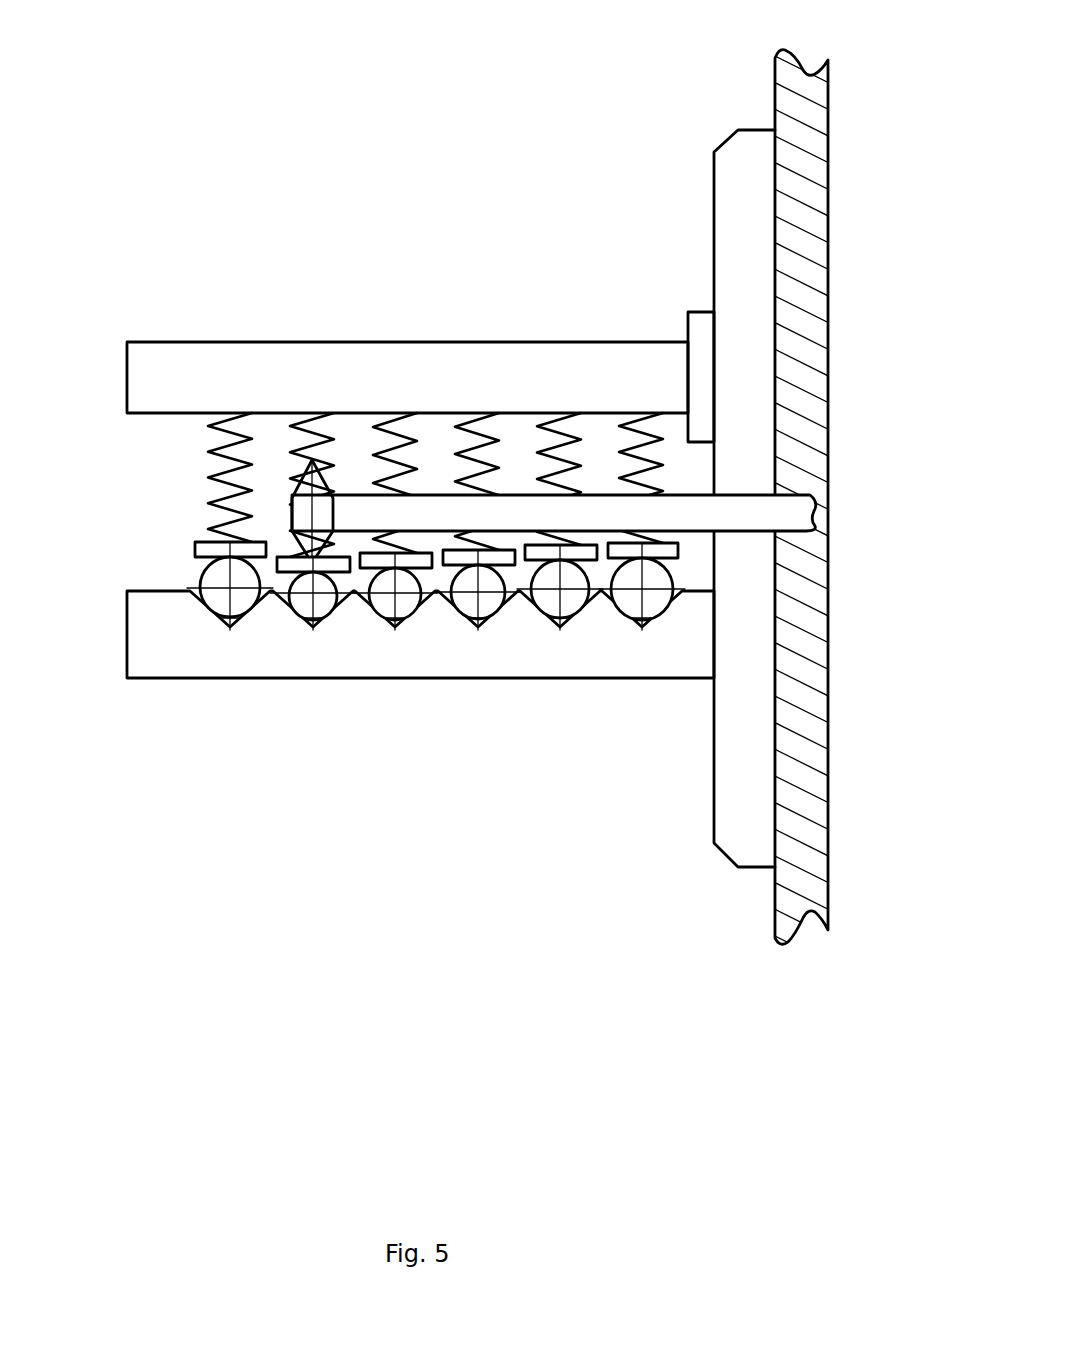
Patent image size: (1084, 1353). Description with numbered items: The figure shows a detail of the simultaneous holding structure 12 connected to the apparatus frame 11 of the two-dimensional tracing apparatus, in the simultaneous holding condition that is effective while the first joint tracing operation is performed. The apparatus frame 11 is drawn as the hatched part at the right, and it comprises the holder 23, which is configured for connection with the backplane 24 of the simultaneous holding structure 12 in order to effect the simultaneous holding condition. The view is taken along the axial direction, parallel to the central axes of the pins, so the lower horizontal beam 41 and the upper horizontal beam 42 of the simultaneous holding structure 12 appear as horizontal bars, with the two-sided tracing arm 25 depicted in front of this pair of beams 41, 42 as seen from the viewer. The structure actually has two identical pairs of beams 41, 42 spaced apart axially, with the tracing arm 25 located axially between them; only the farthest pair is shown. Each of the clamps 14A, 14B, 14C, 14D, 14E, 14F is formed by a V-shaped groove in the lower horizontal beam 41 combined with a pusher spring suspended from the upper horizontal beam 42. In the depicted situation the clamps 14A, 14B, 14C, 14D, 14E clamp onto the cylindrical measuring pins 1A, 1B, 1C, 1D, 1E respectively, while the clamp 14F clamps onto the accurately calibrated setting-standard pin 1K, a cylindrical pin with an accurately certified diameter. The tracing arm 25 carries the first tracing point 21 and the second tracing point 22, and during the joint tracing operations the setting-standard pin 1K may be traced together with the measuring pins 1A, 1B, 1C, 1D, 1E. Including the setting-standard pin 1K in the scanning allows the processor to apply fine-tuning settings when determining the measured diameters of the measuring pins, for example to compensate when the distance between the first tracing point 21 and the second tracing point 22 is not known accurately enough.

The apparatus frame 11 is at (725, 481).
The simultaneous holding structure 12 is at (429, 391).
The holder of the apparatus frame 23 is at (775, 97).
The backplane of the simultaneous holding structure 24 is at (714, 166).
The tracing arm 25 is at (527, 492).
The second tracing point 22 is at (312, 460).
The first tracing point 21 is at (307, 570).
The upper horizontal beam 42 is at (127, 397).
The lower horizontal beam 41 is at (127, 641).
The clamp 14A is at (639, 402).
The clamp 14B is at (556, 402).
The clamp 14C is at (477, 402).
The clamp 14D is at (400, 402).
The clamp 14E is at (300, 402).
The clamp 14F is at (233, 402).
The cylindrical measuring pin 1A is at (640, 630).
The cylindrical measuring pin 1B is at (557, 630).
The cylindrical measuring pin 1C is at (474, 630).
The cylindrical measuring pin 1D is at (392, 630).
The cylindrical measuring pin 1E is at (309, 630).
The accurately calibrated setting-standard pin 1K is at (226, 630).